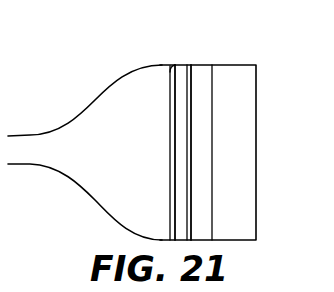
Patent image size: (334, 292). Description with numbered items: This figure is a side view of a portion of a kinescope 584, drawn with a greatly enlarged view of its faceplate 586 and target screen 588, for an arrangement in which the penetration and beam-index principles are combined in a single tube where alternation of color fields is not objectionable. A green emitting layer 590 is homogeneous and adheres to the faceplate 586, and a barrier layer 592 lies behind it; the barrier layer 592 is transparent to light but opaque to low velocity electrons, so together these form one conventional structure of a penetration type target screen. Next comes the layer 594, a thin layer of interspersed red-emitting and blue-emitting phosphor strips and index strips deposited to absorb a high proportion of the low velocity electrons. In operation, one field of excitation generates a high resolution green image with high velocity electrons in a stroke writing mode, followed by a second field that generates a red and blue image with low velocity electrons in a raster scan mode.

The kinescope 584 is at (105, 105).
The faceplate 586 is at (232, 64).
The target screen 588 is at (217, 57).
The green emitting layer 590 is at (198, 115).
The barrier layer 592 is at (180, 181).
The layer 594 is at (173, 152).